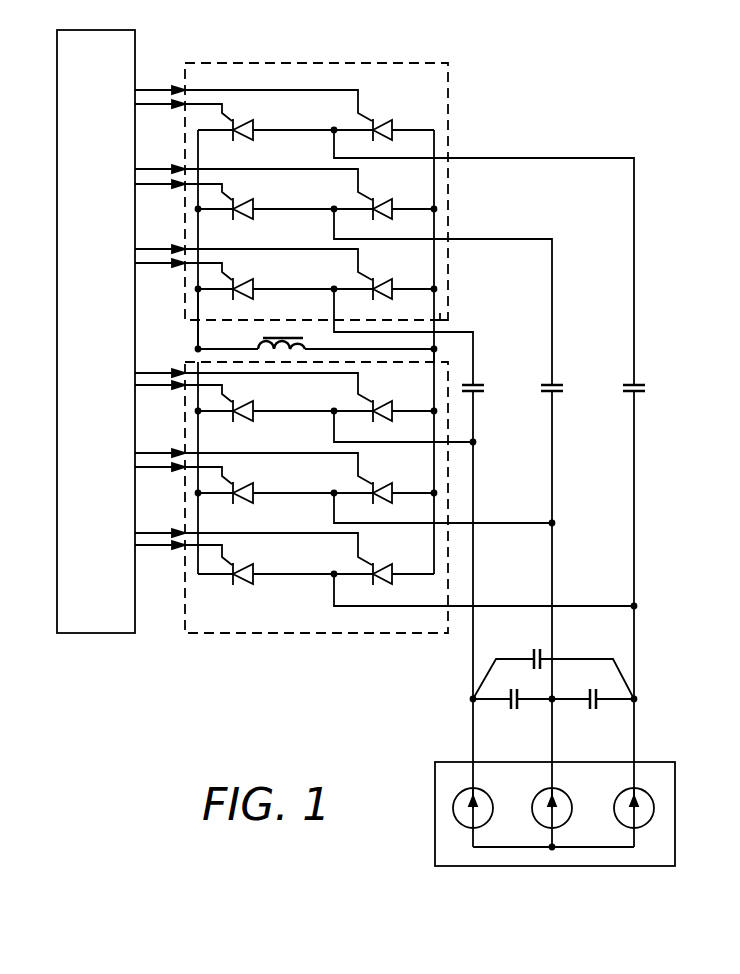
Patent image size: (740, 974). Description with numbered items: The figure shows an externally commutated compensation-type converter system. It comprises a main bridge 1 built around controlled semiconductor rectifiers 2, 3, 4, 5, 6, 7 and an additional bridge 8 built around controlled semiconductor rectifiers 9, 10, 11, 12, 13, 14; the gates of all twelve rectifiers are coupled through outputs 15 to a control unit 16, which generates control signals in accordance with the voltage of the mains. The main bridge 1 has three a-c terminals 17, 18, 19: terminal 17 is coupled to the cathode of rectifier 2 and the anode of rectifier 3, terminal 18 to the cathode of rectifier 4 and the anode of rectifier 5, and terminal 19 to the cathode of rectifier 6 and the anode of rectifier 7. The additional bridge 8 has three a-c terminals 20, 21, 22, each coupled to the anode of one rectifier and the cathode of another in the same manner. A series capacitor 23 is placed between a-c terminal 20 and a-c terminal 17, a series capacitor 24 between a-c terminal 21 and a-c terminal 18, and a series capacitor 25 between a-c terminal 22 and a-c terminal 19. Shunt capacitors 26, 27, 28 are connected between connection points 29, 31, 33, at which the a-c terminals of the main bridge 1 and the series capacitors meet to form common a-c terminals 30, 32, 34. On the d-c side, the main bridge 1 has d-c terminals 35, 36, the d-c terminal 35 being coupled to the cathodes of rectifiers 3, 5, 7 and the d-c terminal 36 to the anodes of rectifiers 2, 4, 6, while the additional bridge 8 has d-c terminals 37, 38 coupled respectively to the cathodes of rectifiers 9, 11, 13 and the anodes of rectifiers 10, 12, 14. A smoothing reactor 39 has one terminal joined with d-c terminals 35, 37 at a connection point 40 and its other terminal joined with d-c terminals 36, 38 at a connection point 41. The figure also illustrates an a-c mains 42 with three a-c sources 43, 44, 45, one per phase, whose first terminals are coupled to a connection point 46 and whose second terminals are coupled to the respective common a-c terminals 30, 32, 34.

The main bridge 1 is at (270, 639).
The controlled semiconductor rectifier 2 is at (390, 412).
The controlled semiconductor rectifier 3 is at (246, 406).
The controlled semiconductor rectifier 4 is at (385, 488).
The controlled semiconductor rectifier 5 is at (246, 486).
The controlled semiconductor rectifier 6 is at (394, 573).
The controlled semiconductor rectifier 7 is at (246, 568).
The additional bridge 8 is at (455, 92).
The controlled semiconductor rectifier 9 is at (244, 282).
The controlled semiconductor rectifier 10 is at (386, 286).
The controlled semiconductor rectifier 11 is at (250, 200).
The controlled semiconductor rectifier 12 is at (388, 206).
The controlled semiconductor rectifier 13 is at (254, 123).
The controlled semiconductor rectifier 14 is at (390, 122).
The outputs of the control unit 15 is at (152, 90).
The control unit 16 is at (96, 331).
The a-c terminal 17 is at (456, 442).
The a-c terminal 18 is at (504, 523).
The a-c terminal 19 is at (591, 606).
The a-c terminal 20 is at (456, 332).
The a-c terminal 21 is at (485, 239).
The a-c terminal 22 is at (512, 158).
The series capacitor 23 is at (478, 394).
The series capacitor 24 is at (554, 394).
The series capacitor 25 is at (636, 394).
The shunt capacitor 26 is at (510, 708).
The shunt capacitor 27 is at (531, 652).
The shunt capacitor 28 is at (594, 708).
The connection point 29 is at (477, 442).
The common a-c terminal 30 is at (472, 730).
The connection point 31 is at (556, 521).
The common a-c terminal 32 is at (553, 741).
The connection point 33 is at (635, 604).
The common a-c terminal 34 is at (636, 733).
The d-c terminal 35 is at (198, 350).
The d-c terminal 36 is at (436, 352).
The d-c terminal 37 is at (196, 316).
The d-c terminal 38 is at (438, 320).
The smoothing reactor 39 is at (262, 344).
The connection point 40 is at (196, 340).
The connection point 41 is at (436, 349).
The a-c mains 42 is at (480, 868).
The a-c source 43 is at (486, 800).
The a-c source 44 is at (568, 800).
The a-c source 45 is at (640, 828).
The connection point 46 is at (555, 846).